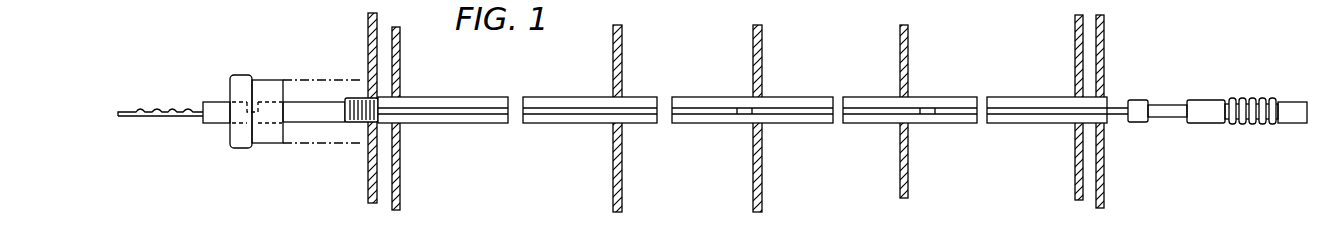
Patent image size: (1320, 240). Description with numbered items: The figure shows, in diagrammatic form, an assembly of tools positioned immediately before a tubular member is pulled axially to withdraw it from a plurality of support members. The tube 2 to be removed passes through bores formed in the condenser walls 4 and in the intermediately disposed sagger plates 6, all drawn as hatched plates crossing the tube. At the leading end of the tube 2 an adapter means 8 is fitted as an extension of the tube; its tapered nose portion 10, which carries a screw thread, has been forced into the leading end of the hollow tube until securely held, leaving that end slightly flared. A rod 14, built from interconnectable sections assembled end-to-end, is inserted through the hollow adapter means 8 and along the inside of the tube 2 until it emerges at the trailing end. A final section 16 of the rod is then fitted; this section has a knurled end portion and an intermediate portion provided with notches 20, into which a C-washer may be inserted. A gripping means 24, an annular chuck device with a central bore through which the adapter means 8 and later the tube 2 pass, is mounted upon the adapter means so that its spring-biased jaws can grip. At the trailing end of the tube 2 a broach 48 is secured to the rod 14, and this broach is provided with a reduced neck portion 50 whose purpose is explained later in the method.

The tube 2 is at (563, 97).
The condenser walls 4 is at (394, 209).
The sagger plates 6 is at (753, 173).
The adapter means 8 is at (328, 123).
The tapered nose portion 10 is at (363, 80).
The rod 14 is at (467, 107).
The final section 16 is at (119, 109).
The notches 20 is at (172, 109).
The gripping means 24 is at (268, 138).
The broach 48 is at (1245, 102).
The reduced neck portion 50 is at (1160, 105).